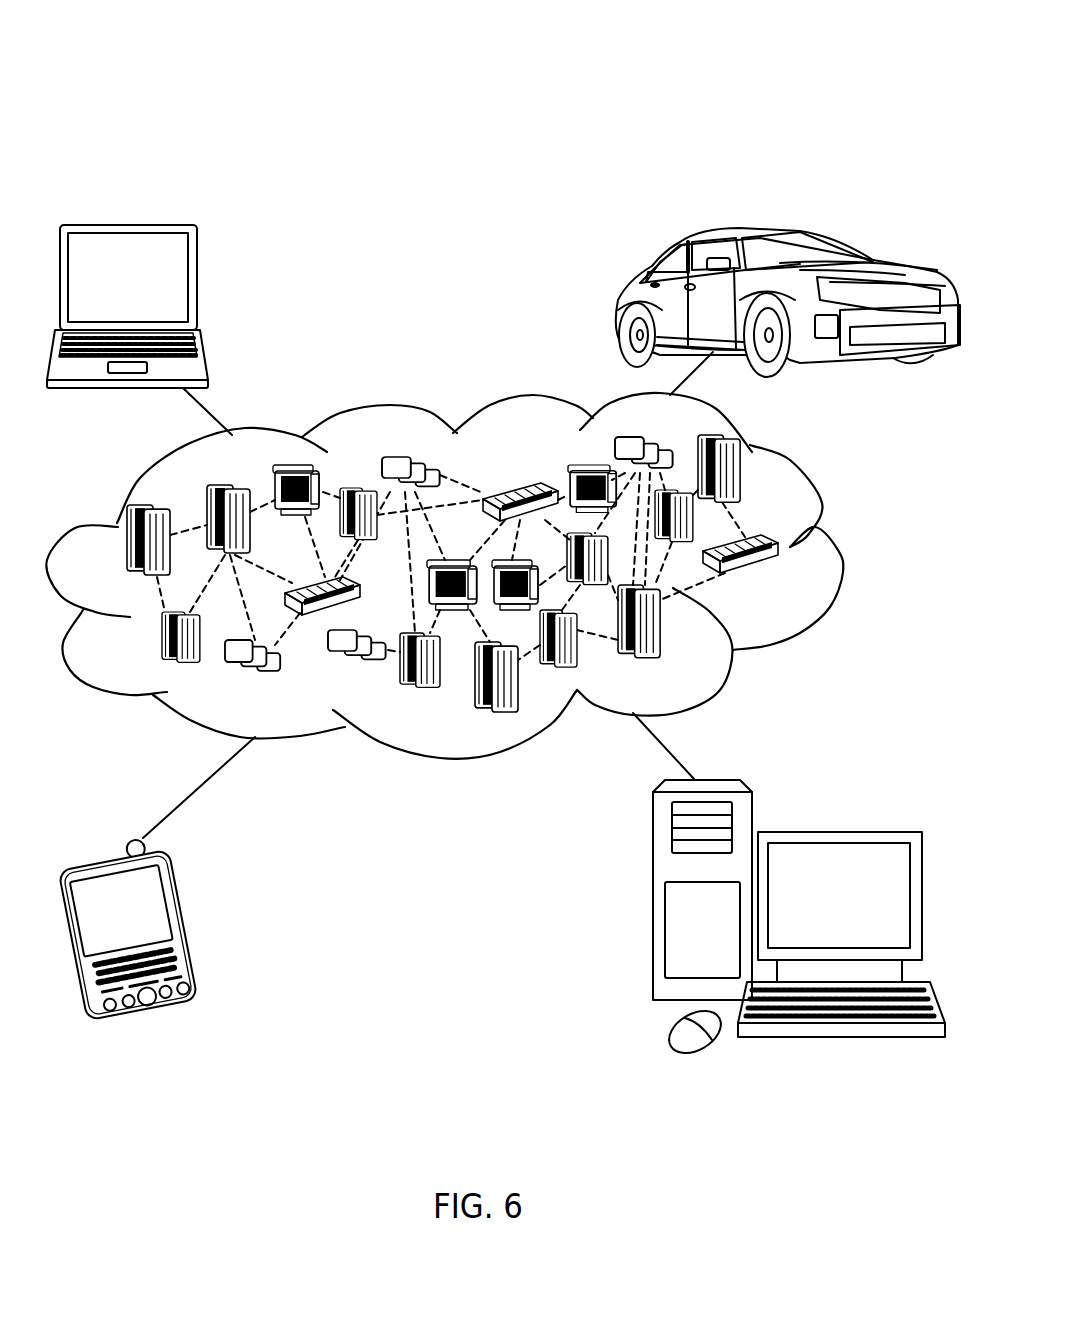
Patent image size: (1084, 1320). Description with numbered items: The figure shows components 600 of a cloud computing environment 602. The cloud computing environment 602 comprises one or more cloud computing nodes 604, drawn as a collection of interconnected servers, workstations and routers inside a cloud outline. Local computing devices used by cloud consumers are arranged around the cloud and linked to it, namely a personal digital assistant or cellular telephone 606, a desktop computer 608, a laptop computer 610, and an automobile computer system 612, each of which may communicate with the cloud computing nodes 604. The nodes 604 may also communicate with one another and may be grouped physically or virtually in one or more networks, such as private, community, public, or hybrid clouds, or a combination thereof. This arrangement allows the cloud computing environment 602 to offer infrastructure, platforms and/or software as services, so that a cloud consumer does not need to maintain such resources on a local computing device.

The components 600 is at (721, 98).
The cloud computing environment 602 is at (838, 552).
The cloud computing nodes 604 is at (527, 566).
The personal digital assistant (PDA) or cellular telephone 606 is at (183, 927).
The desktop computer 608 is at (837, 832).
The laptop computer 610 is at (197, 285).
The automobile computer system 612 is at (620, 300).